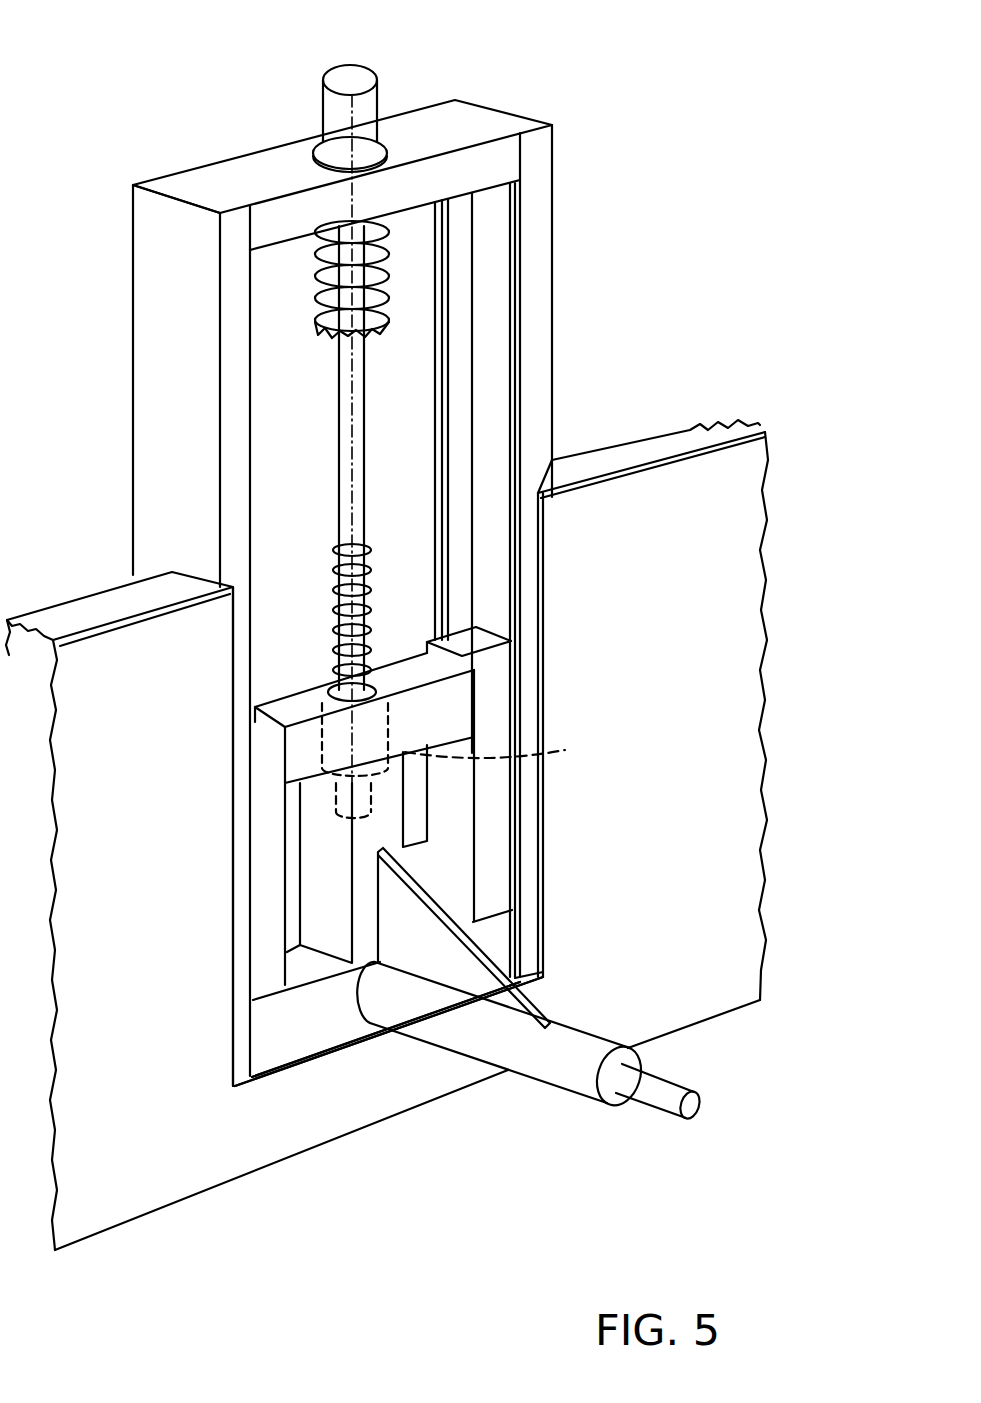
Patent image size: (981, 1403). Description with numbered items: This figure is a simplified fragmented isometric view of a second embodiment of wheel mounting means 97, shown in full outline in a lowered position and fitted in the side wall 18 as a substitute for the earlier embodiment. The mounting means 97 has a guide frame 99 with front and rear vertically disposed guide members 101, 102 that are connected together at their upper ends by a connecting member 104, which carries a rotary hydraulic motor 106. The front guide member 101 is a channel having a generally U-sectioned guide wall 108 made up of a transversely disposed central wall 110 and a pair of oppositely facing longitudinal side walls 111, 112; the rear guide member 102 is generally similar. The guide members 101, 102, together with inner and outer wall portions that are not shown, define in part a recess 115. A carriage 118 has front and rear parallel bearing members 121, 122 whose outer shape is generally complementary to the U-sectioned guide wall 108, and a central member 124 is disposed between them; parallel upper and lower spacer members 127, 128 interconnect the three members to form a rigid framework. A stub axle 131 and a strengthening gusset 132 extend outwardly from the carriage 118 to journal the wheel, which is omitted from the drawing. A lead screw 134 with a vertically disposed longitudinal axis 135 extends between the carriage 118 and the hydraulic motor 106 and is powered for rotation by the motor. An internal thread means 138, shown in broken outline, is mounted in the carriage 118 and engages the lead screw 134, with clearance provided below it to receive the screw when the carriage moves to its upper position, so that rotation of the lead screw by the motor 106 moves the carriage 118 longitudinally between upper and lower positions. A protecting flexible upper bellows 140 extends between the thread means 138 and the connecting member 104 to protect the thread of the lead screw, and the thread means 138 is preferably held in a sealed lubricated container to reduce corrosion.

The side wall 18 is at (673, 485).
The wheel mounting means 97 is at (371, 586).
The guide frame 99 is at (556, 91).
The front guide member 101 is at (540, 196).
The rear guide member 102 is at (170, 256).
The connecting member 104 is at (455, 120).
The rotary hydraulic motor 106 is at (333, 105).
The guide wall 108 is at (580, 132).
The central wall 110 is at (492, 240).
The longitudinal side wall 111 is at (462, 356).
The longitudinal side wall 112 is at (513, 292).
The recess 115 is at (292, 508).
The carriage 118 is at (455, 733).
The front bearing member 121 is at (493, 806).
The rear bearing member 122 is at (268, 805).
The central member 124 is at (328, 872).
The upper spacer member 127 is at (302, 702).
The lower spacer member 128 is at (300, 1022).
The stub axle 131 is at (577, 1065).
The strengthening gusset 132 is at (458, 950).
The lead screw 134 is at (366, 447).
The longitudinal axis 135 is at (352, 424).
The internal thread means 138 is at (553, 749).
The upper bellows 140 is at (323, 318).